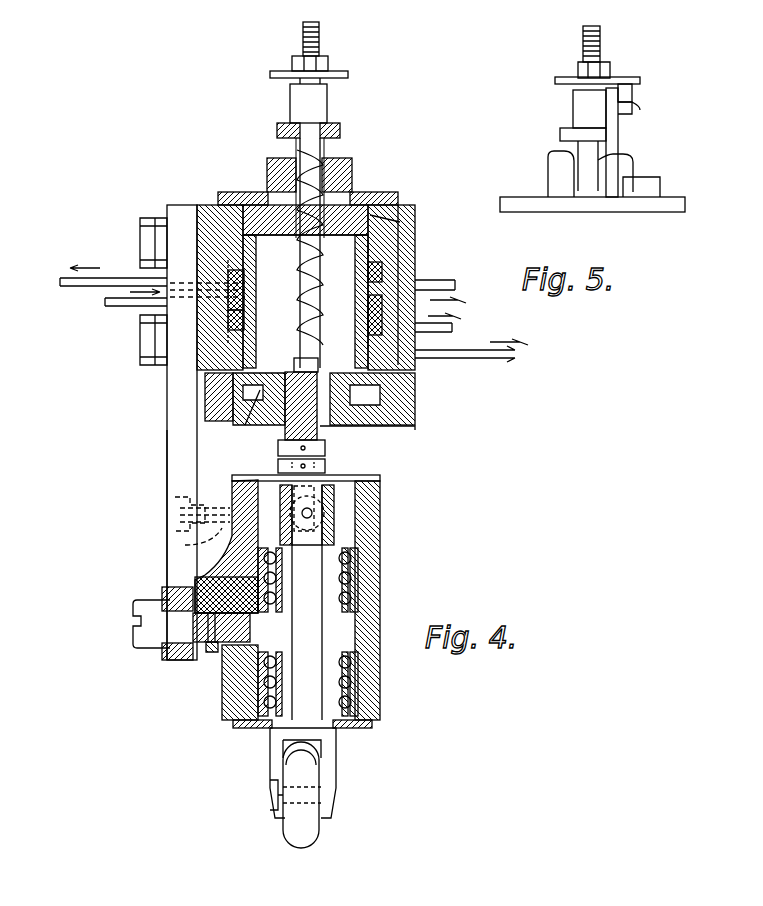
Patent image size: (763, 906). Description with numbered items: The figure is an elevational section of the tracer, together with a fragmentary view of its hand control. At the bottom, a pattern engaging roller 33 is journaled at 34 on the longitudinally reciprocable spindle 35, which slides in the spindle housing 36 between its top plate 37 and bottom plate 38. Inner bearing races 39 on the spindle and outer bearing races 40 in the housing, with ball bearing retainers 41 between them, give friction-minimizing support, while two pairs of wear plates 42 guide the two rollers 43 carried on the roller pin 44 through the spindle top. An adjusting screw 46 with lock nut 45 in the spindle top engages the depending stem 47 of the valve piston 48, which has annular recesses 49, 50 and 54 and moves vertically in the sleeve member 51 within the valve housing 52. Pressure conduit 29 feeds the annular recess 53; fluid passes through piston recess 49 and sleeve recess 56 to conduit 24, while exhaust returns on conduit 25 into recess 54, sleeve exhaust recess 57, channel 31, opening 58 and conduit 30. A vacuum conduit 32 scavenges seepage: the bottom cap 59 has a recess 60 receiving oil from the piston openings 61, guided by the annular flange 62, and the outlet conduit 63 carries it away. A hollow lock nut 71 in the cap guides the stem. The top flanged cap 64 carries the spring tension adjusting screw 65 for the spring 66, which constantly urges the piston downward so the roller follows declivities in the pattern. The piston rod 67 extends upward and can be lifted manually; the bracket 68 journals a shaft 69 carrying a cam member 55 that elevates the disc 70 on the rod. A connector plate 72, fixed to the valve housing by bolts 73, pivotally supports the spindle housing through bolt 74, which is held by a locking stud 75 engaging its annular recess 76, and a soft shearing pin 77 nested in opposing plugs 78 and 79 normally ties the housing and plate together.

In FIG. 4, the fluid conduit 24 is at (455, 285).
In FIG. 4, the fluid conduit 25 is at (452, 328).
In FIG. 4, the pressure conduit 29 is at (110, 308).
In FIG. 4, the exhaust conduit 30 is at (125, 285).
In FIG. 4, the conduit 31 is at (187, 266).
In FIG. 4, the vacuum conduit 32 is at (465, 358).
In FIG. 4, the pattern engaging roller 33 is at (305, 833).
In FIG. 4, the journal 34 is at (321, 795).
In FIG. 4, the spindle 35 is at (336, 755).
In FIG. 4, the spindle housing 36 is at (380, 548).
In FIG. 4, the top plate 37 is at (380, 479).
In FIG. 4, the bottom plate 38 is at (372, 724).
In FIG. 4, the inner bearing races 39 is at (323, 578).
In FIG. 4, the outer bearing races 40 is at (360, 590).
In FIG. 4, the ball bearing retainers 41 is at (350, 570).
In FIG. 4, the wear plates 42 is at (306, 515).
In FIG. 4, the rollers 43 is at (324, 521).
In FIG. 4, the roller pin 44 is at (294, 521).
In FIG. 4, the lock nut 45 is at (325, 466).
In FIG. 4, the adjusting screw 46 is at (325, 450).
In FIG. 4, the depending stem 47 is at (288, 434).
In FIG. 4, the valve member or piston 48 is at (255, 318).
In FIG. 4, the piston recess 49 is at (252, 282).
In FIG. 4, the piston recess 50 is at (245, 333).
In FIG. 4, the sleeve member 51 is at (415, 222).
In FIG. 4, the valve housing 52 is at (415, 240).
In FIG. 4, the annular recess 53 is at (238, 300).
In FIG. 4, the piston recess 54 is at (375, 330).
In FIG. 5, the cam member 55 is at (632, 92).
In FIG. 4, the sleeve recess 56 is at (372, 290).
In FIG. 4, the sleeve exhaust recess 57 is at (372, 345).
In FIG. 4, the exhaust opening 58 is at (358, 273).
In FIG. 4, the bottom cap 59 is at (215, 400).
In FIG. 4, the recess 60 is at (245, 425).
In FIG. 4, the openings 61 is at (265, 361).
In FIG. 4, the annular flange 62 is at (215, 385).
In FIG. 4, the outlet conduit 63 is at (400, 393).
In FIG. 4, the top flanged cap 64 is at (236, 192).
In FIG. 5, the top flanged cap 64 is at (515, 200).
In FIG. 4, the spring tension adjusting screw 65 is at (340, 129).
In FIG. 5, the spring tension adjusting screw 65 is at (560, 134).
In FIG. 4, the spring 66 is at (305, 150).
In FIG. 4, the piston rod 67 is at (320, 38).
In FIG. 5, the piston rod 67 is at (601, 40).
In FIG. 5, the bracket 68 is at (662, 194).
In FIG. 5, the shaft 69 is at (645, 110).
In FIG. 4, the disc 70 is at (270, 74).
In FIG. 5, the disc 70 is at (640, 80).
In FIG. 4, the hollow lock nut 71 is at (350, 432).
In FIG. 4, the connector plate 72 is at (175, 450).
In FIG. 4, the bolts 73 is at (150, 242).
In FIG. 4, the bolt 74 is at (133, 610).
In FIG. 4, the locking stud 75 is at (210, 655).
In FIG. 4, the annular recess 76 is at (250, 628).
In FIG. 4, the shearing pin 77 is at (178, 515).
In FIG. 4, the plug 78 is at (178, 500).
In FIG. 4, the plug 79 is at (185, 545).